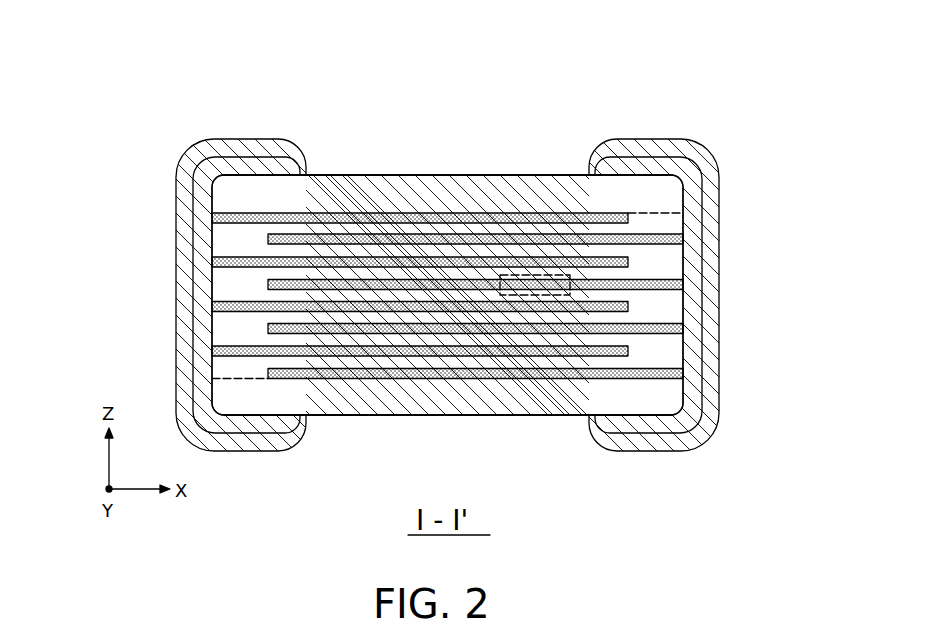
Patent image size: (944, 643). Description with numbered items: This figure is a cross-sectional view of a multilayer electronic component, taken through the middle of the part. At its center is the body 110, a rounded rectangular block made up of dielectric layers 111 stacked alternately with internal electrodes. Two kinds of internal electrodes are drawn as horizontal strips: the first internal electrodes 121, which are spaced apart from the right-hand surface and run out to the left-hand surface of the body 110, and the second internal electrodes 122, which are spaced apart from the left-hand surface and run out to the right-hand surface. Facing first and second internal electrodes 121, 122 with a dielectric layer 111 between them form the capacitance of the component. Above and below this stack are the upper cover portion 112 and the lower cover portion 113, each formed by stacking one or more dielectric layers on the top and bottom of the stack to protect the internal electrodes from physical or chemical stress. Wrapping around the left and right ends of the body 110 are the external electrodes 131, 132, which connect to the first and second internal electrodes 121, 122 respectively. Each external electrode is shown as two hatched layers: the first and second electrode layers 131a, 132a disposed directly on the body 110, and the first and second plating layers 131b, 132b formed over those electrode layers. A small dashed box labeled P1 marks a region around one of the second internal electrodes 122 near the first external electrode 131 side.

The body 110 is at (381, 175).
The dielectric layer 111 is at (339, 250).
The upper cover portion 112 is at (452, 190).
The lower cover portion 113 is at (451, 399).
The first internal electrode 121 is at (514, 213).
The second internal electrode 122 is at (572, 240).
The first external electrode 131 is at (309, 295).
The first electrode layer 131a is at (206, 224).
The first plating layer 131b is at (181, 250).
The second external electrode 132 is at (610, 295).
The second electrode layer 132a is at (692, 203).
The second plating layer 132b is at (712, 228).
The enlarged portion region P1 is at (540, 296).